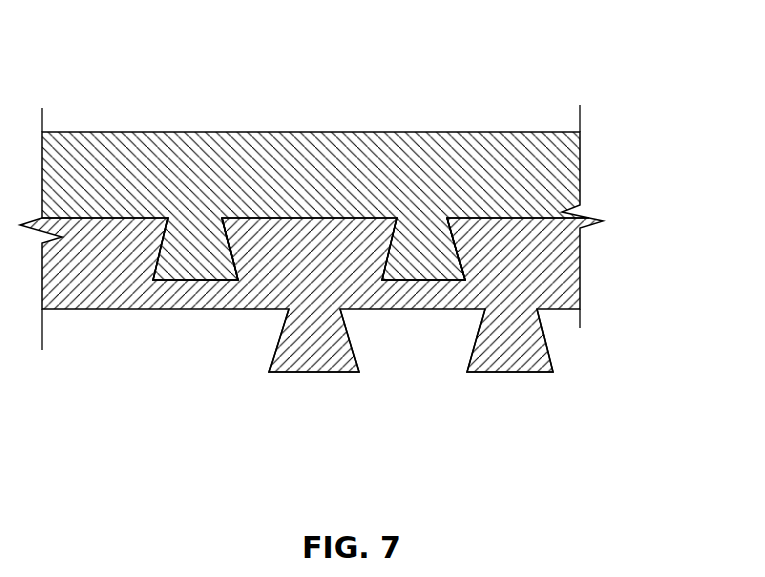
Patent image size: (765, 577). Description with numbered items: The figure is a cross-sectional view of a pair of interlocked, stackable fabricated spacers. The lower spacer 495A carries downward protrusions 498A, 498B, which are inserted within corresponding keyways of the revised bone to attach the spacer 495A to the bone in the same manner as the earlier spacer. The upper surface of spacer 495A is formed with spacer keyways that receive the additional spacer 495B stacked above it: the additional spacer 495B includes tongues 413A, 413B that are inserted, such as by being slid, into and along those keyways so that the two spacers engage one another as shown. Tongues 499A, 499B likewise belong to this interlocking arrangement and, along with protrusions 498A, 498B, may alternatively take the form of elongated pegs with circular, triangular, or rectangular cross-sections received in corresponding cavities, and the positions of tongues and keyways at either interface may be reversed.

The additional spacer 495B is at (337, 118).
The spacer 495A is at (420, 336).
The tongue 499A is at (190, 258).
The tongue 499B is at (438, 255).
The tongue 413A is at (232, 252).
The tongue 413B is at (458, 253).
The protrusion 498A is at (295, 352).
The protrusion 498B is at (540, 365).